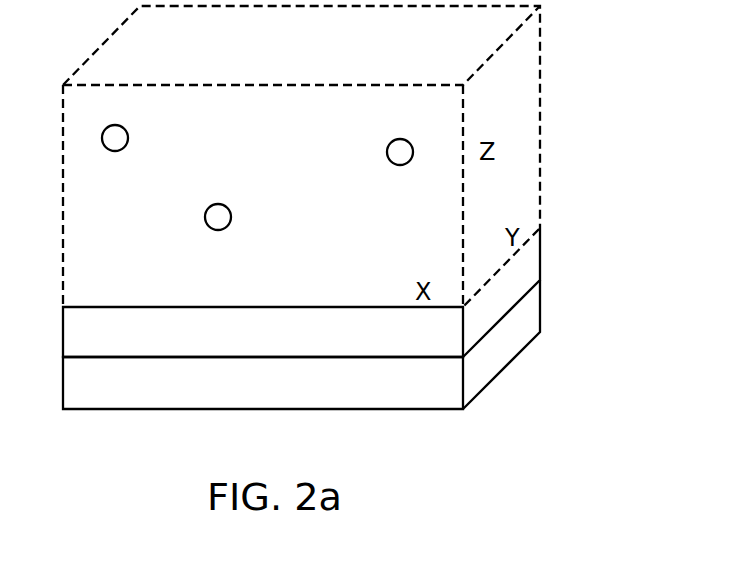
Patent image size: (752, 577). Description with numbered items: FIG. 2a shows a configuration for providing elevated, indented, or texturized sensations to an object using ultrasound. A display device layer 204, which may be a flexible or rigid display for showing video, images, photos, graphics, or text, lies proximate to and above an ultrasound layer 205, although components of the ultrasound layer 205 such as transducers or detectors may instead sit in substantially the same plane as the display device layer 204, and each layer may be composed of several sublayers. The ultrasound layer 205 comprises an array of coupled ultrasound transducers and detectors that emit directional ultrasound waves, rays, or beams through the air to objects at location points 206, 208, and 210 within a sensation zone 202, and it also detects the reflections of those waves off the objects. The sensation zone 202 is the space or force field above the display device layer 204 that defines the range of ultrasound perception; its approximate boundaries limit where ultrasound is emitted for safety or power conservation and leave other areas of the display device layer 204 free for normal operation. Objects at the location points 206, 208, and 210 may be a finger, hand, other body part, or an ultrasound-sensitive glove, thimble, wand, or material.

The sensation zone 202 is at (541, 143).
The display device layer 204 is at (541, 253).
The ultrasound layer 205 is at (541, 310).
The location point 206 is at (389, 161).
The location point 208 is at (209, 227).
The location point 210 is at (129, 136).